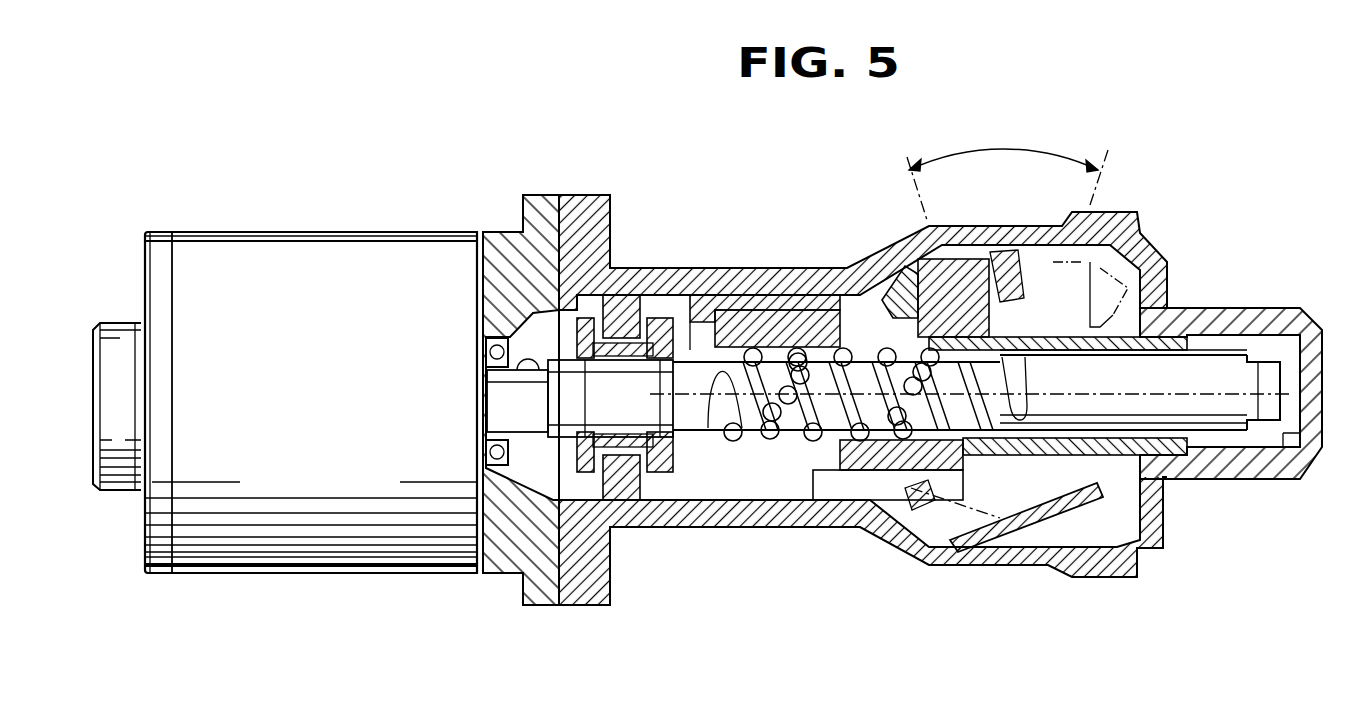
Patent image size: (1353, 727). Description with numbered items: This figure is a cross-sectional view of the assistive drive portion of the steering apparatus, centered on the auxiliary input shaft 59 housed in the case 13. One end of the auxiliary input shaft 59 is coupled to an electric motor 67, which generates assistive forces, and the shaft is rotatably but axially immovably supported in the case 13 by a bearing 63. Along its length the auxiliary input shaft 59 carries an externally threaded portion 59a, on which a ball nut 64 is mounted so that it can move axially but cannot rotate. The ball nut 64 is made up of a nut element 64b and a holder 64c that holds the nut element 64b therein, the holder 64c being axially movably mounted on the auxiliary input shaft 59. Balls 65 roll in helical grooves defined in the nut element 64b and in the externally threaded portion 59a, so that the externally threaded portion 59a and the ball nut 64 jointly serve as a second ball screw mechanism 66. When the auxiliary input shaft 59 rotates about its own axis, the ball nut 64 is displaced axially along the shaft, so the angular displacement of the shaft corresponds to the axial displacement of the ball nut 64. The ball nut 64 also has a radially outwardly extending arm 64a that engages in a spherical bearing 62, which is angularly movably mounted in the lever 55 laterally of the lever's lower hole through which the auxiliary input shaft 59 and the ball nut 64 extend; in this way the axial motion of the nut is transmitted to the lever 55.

The electric motor 67 is at (338, 242).
The bearing 63 is at (632, 332).
The ball nut 64 is at (843, 326).
The arm 64a is at (968, 270).
The nut element 64b is at (742, 318).
The holder 64c is at (825, 294).
The spherical bearing 62 is at (898, 282).
The case 13 is at (1262, 312).
The auxiliary input shaft 59 is at (1203, 367).
The second ball screw mechanism 66 is at (728, 472).
The balls 65 is at (837, 465).
The externally threaded portion 59a is at (970, 478).
The lever 55 is at (1040, 512).